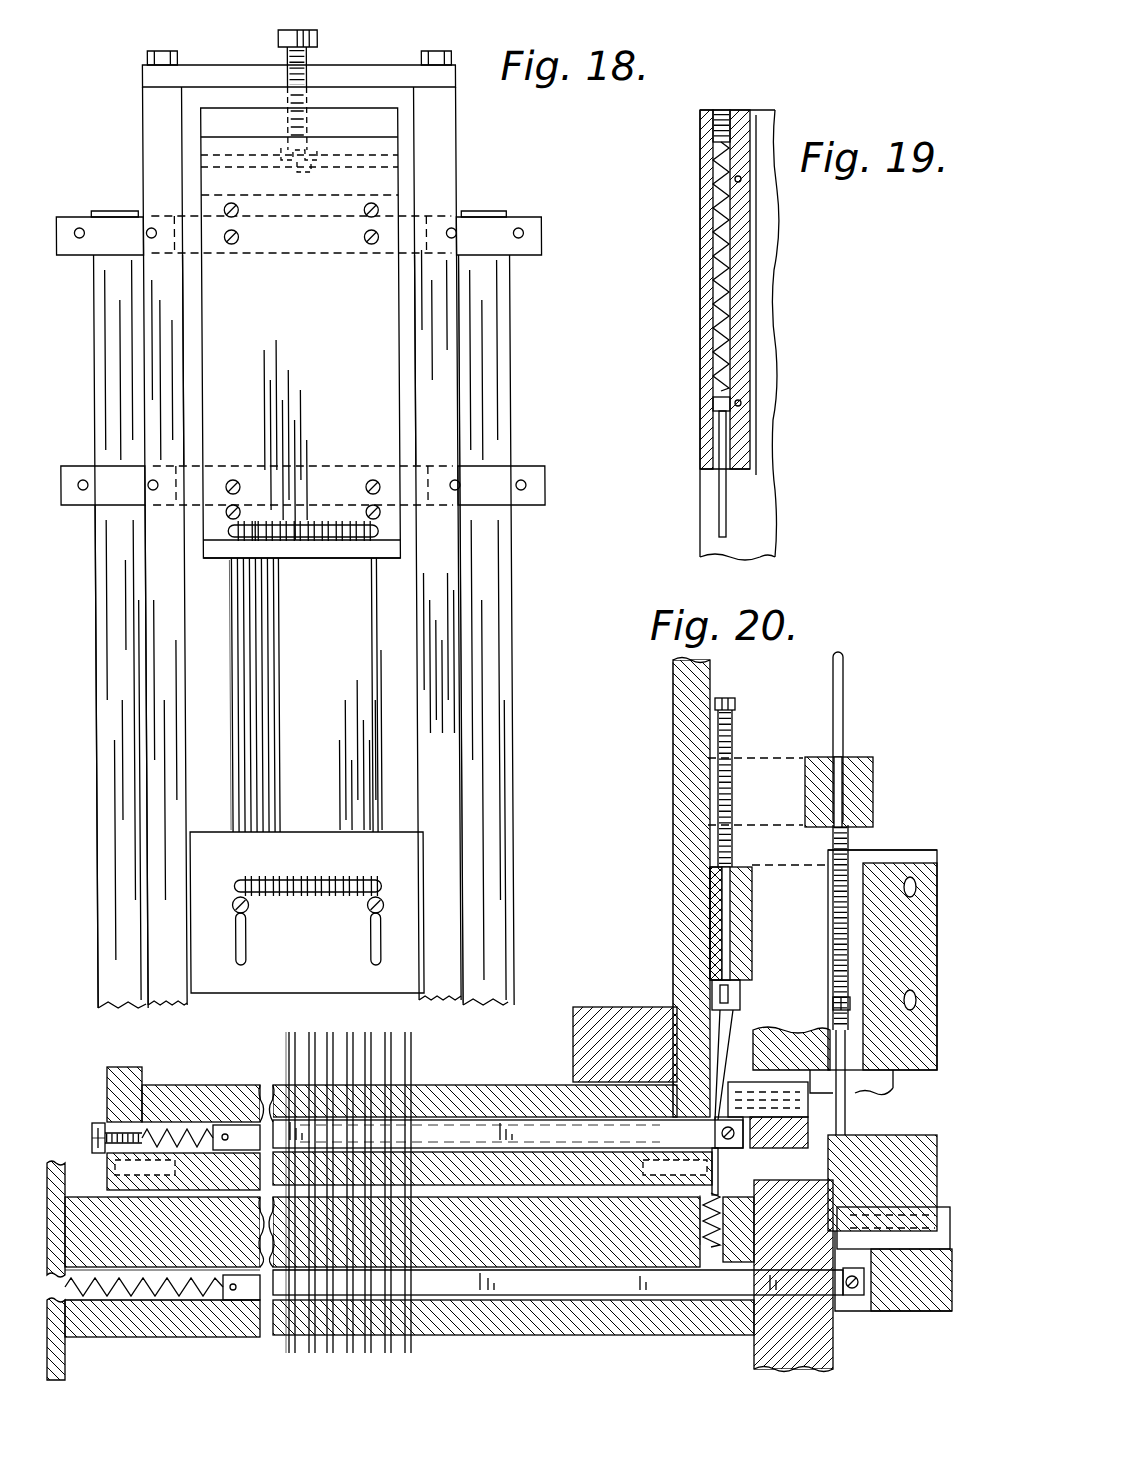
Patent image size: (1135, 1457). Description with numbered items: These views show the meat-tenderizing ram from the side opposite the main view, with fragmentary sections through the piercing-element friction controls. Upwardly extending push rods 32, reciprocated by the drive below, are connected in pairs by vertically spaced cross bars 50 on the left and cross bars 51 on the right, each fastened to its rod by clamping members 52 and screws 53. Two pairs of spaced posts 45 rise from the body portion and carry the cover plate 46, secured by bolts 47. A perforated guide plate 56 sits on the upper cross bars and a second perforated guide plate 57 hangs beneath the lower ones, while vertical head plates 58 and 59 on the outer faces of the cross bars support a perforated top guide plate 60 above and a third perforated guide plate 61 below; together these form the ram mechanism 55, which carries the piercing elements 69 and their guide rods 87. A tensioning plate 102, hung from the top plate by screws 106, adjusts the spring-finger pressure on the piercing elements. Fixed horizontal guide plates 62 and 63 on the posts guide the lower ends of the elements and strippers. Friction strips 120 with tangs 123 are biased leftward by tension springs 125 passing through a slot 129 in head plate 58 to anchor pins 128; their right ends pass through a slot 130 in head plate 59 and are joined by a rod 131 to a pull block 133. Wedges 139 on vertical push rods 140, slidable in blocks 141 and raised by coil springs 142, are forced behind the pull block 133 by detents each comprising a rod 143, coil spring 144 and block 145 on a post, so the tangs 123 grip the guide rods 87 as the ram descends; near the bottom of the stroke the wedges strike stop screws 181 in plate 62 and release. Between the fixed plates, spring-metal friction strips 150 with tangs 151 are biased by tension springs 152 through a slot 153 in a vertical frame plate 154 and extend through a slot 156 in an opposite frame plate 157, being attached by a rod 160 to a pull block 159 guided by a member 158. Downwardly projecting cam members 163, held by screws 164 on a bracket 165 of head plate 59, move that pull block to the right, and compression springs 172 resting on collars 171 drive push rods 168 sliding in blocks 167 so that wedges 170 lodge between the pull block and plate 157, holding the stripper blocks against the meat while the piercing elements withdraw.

In FIG. 18, the push rods 32 is at (495, 673).
In FIG. 18, the posts 45 is at (181, 336).
In FIG. 18, the cover plate 46 is at (243, 72).
In FIG. 18, the bolts 47 is at (147, 58).
In FIG. 18, the cross bars 50 is at (300, 262).
In FIG. 20, the cross bars 51 is at (575, 1007).
In FIG. 18, the clamping members 52 is at (78, 255).
In FIG. 18, the screws 53 is at (80, 228).
In FIG. 18, the ram mechanism 55 is at (457, 358).
In FIG. 20, the ram mechanism 55 is at (662, 825).
In FIG. 18, the perforated guide plate 56 is at (340, 195).
In FIG. 20, the second perforated guide plate 57 is at (280, 1087).
In FIG. 18, the vertical head plate 58 is at (372, 288).
In FIG. 20, the vertical head plate 58 is at (120, 1068).
In FIG. 19, the vertical head plate 59 is at (770, 294).
In FIG. 20, the vertical head plate 59 is at (675, 745).
In FIG. 18, the perforated top guide plate 60 is at (203, 118).
In FIG. 18, the third perforated guide plate 61 is at (358, 552).
In FIG. 20, the third perforated guide plate 61 is at (477, 1160).
In FIG. 20, the guide plate 62 is at (275, 1230).
In FIG. 20, the guide plate 63 is at (100, 1338).
In FIG. 18, the piercing elements 69 is at (226, 660).
In FIG. 20, the piercing elements 69 is at (286, 1037).
In FIG. 18, the guide rods 87 is at (240, 700).
In FIG. 20, the guide rods 87 is at (408, 1032).
In FIG. 18, the tensioning plate 102 is at (360, 150).
In FIG. 18, the screws 106 is at (310, 30).
In FIG. 20, the friction strips 120 is at (580, 1135).
In FIG. 20, the tangs 123 is at (412, 1095).
In FIG. 20, the tension spring 125 is at (182, 1128).
In FIG. 18, the anchor pin 128 is at (300, 522).
In FIG. 20, the anchor pin 128 is at (98, 1123).
In FIG. 18, the horizontal slot 129 is at (256, 541).
In FIG. 20, the horizontal slot 129 is at (108, 1123).
In FIG. 20, the slot 130 is at (705, 1118).
In FIG. 20, the rod 131 is at (760, 1150).
In FIG. 20, the pull block 133 is at (785, 1150).
In FIG. 20, the wedges 139 is at (705, 998).
In FIG. 20, the vertical push rod 140 is at (726, 918).
In FIG. 20, the block 141 is at (715, 950).
In FIG. 20, the coil springs 142 is at (720, 790).
In FIG. 19, the vertical rod 143 is at (726, 498).
In FIG. 19, the coil spring 144 is at (713, 304).
In FIG. 19, the block 145 is at (740, 236).
In FIG. 20, the friction strips 150 is at (562, 1295).
In FIG. 20, the tangs 151 is at (435, 1282).
In FIG. 20, the tension spring 152 is at (183, 1300).
In FIG. 18, the slot 153 is at (228, 900).
In FIG. 20, the slot 153 is at (85, 1340).
In FIG. 18, the vertical frame plate 154 is at (300, 818).
In FIG. 20, the vertical frame plate 154 is at (60, 1165).
In FIG. 20, the slot 156 is at (760, 1272).
In FIG. 20, the vertical frame plate 157 is at (760, 1360).
In FIG. 20, the member 158 is at (945, 1130).
In FIG. 20, the pull block 159 is at (920, 1305).
In FIG. 20, the rod 160 is at (855, 1292).
In FIG. 20, the cam members 163 is at (893, 1080).
In FIG. 20, the screws 164 is at (920, 880).
In FIG. 20, the bracket 165 is at (888, 860).
In FIG. 20, the blocks 167 is at (866, 772).
In FIG. 20, the push rod 168 is at (843, 680).
In FIG. 20, the wedges 170 is at (856, 1238).
In FIG. 20, the adjustable collar 171 is at (833, 1002).
In FIG. 20, the coiled compression spring 172 is at (835, 902).
In FIG. 20, the stop screws 181 is at (695, 1260).